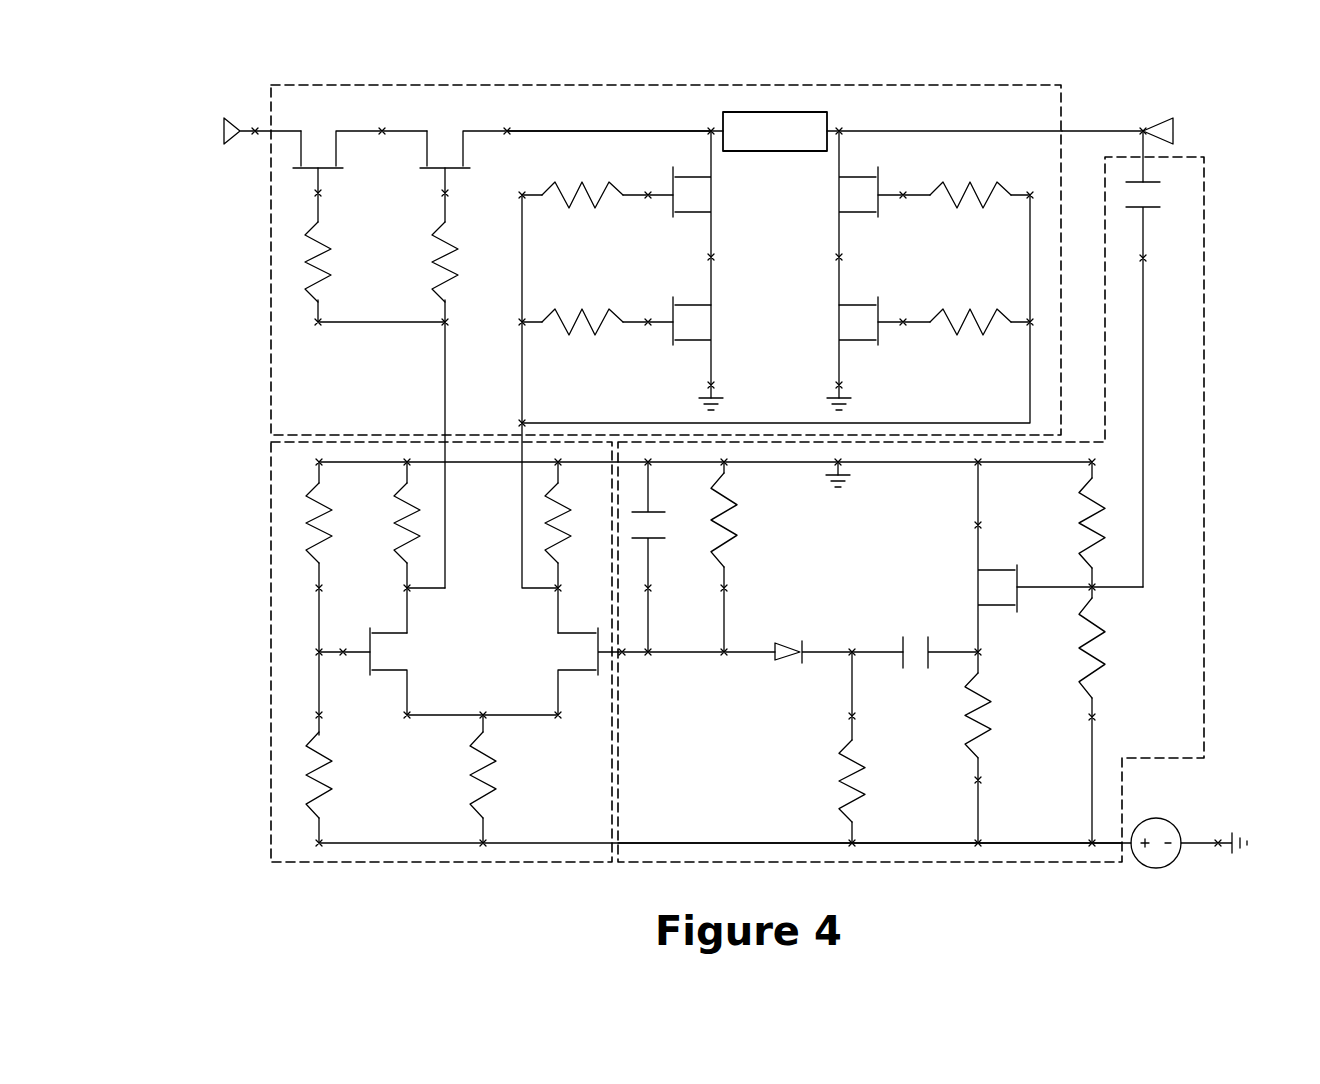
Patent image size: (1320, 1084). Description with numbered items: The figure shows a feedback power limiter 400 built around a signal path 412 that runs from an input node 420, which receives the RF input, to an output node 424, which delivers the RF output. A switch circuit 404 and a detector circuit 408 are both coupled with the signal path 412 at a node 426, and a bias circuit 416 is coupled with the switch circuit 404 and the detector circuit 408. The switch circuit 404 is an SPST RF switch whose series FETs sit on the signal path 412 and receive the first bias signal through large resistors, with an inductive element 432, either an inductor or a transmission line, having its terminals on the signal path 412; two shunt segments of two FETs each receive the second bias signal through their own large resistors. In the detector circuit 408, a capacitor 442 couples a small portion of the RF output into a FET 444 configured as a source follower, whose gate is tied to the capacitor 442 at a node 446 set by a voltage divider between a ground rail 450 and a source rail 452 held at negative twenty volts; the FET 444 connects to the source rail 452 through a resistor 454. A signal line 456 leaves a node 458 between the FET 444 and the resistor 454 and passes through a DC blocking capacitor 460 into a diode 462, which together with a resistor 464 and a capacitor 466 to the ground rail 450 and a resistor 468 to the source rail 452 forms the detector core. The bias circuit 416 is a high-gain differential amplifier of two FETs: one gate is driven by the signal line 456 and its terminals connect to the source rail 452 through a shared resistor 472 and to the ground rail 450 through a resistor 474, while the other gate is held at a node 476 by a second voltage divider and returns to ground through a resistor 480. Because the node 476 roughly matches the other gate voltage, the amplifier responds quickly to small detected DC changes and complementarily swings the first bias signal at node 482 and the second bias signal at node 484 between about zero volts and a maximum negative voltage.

The feedback power limiter 400 is at (250, 679).
The switch circuit 404 is at (890, 85).
The detector circuit 408 is at (893, 862).
The signal path 412 is at (1068, 131).
The bias circuit 416 is at (475, 862).
The input node 420 is at (230, 118).
The output node 424 is at (1178, 137).
The node 426 is at (1143, 126).
The inductive element 432 is at (775, 131).
The capacitor 442 is at (1165, 384).
The FET 444 is at (978, 555).
The node 446 is at (1097, 592).
The ground rail 450 is at (862, 463).
The source rail 452 is at (765, 843).
The resistor 454 is at (1003, 749).
The signal line 456 is at (837, 648).
The node 458 is at (976, 646).
The DC blocking capacitor 460 is at (936, 667).
The diode 462 is at (811, 666).
The resistor 464 is at (673, 557).
The capacitor 466 is at (711, 557).
The resistor 468 is at (873, 749).
The resistor 472 is at (459, 779).
The resistor 474 is at (577, 546).
The node 476 is at (315, 652).
The resistor 480 is at (387, 546).
The node 482 is at (412, 603).
The node 484 is at (555, 600).